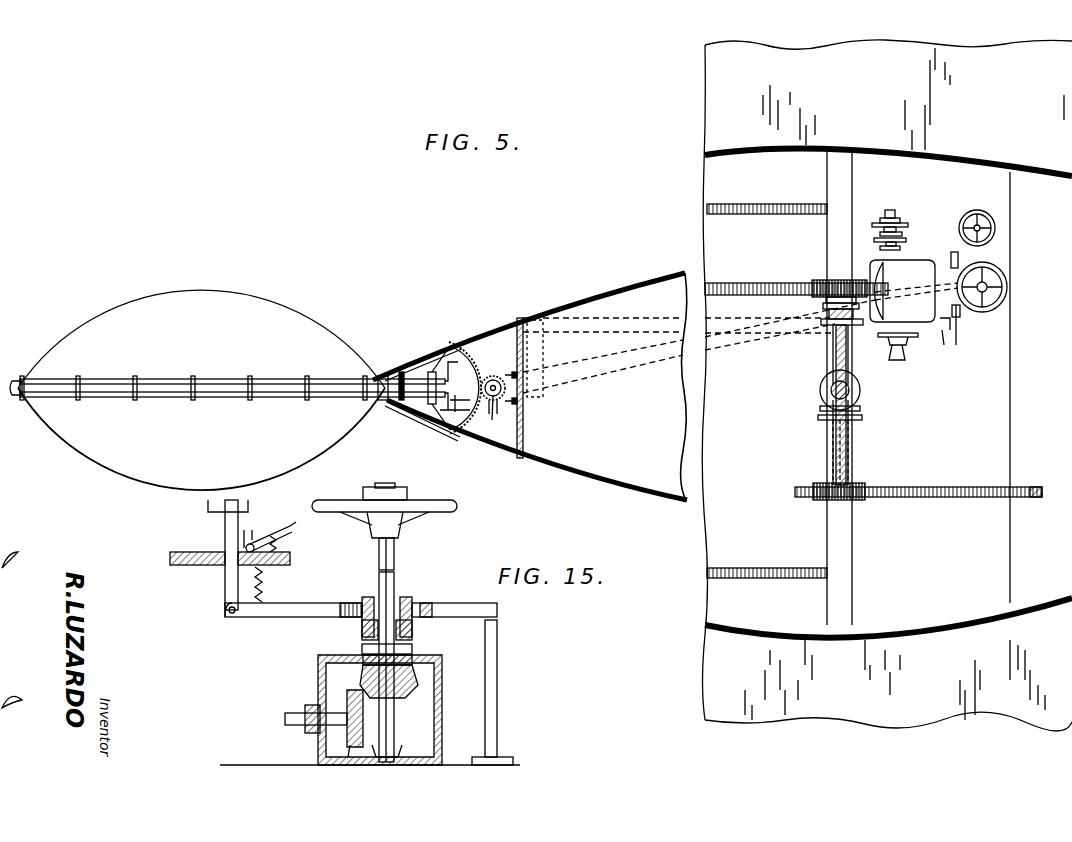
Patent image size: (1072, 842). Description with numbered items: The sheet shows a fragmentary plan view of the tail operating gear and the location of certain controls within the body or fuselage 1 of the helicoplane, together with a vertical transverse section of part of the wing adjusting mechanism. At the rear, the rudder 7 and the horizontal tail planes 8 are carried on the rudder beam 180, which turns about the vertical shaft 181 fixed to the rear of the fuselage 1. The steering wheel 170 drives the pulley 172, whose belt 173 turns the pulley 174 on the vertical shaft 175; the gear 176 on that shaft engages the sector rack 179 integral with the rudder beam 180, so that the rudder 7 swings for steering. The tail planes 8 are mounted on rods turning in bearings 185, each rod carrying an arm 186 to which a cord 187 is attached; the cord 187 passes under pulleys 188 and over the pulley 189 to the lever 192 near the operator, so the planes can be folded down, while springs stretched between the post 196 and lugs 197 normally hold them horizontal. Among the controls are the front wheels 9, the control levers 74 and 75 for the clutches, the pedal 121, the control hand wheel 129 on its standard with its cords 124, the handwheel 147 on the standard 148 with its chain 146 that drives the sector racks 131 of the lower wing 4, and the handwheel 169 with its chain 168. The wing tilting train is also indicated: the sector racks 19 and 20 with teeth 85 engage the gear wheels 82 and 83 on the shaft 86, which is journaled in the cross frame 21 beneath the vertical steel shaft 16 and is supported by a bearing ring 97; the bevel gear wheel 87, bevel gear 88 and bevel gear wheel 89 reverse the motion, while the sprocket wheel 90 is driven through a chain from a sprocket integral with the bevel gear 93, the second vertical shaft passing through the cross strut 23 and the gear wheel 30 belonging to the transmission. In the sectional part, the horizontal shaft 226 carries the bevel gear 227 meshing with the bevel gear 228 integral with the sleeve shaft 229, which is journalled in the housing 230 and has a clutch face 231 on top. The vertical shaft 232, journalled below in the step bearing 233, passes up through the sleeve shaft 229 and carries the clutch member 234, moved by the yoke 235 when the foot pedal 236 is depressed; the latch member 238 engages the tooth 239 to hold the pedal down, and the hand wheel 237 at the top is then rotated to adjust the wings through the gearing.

In FIG. 5, the body or fuselage 1 is at (962, 152).
In FIG. 5, the lower wing 4 is at (962, 715).
In FIG. 5, the rudder 7 is at (323, 398).
In FIG. 5, the horizontal tail planes 8 is at (201, 390).
In FIG. 5, the front wheels 9 is at (987, 328).
In FIG. 5, the vertical steel shaft 16 is at (858, 391).
In FIG. 5, the sector rack 19 is at (926, 487).
In FIG. 5, the sector rack 20 is at (776, 283).
In FIG. 5, the cross frame 21 is at (833, 353).
In FIG. 5, the cross strut 23 is at (853, 184).
In FIG. 5, the gear wheel 30 is at (912, 347).
In FIG. 5, the control lever 74 is at (995, 356).
In FIG. 5, the control lever 75 is at (975, 341).
In FIG. 5, the gear wheel 82 is at (862, 485).
In FIG. 5, the gear wheel 83 is at (838, 280).
In FIG. 5, the teeth 85 is at (826, 300).
In FIG. 5, the shaft 86 is at (848, 450).
In FIG. 5, the bevel gear wheel 87 is at (858, 322).
In FIG. 5, the bevel gear 88 is at (829, 313).
In FIG. 5, the bevel gear wheel 89 is at (823, 306).
In FIG. 5, the sprocket wheel 90 is at (818, 418).
In FIG. 5, the bevel gear 93 is at (861, 409).
In FIG. 5, the bearing ring 97 is at (820, 389).
In FIG. 5, the pedal 121 is at (963, 340).
In FIG. 5, the cords 124 is at (896, 361).
In FIG. 5, the control hand wheel 129 is at (873, 348).
In FIG. 5, the sector racks 131 is at (772, 204).
In FIG. 5, the chain 146 is at (880, 214).
In FIG. 5, the handwheel 147 is at (905, 223).
In FIG. 5, the standard 148 is at (890, 210).
In FIG. 5, the chain 168 is at (878, 242).
In FIG. 5, the handwheel 169 is at (900, 248).
In FIG. 5, the steering wheel 170 is at (1007, 296).
In FIG. 5, the pulley 172 is at (1007, 285).
In FIG. 5, the belt 173 is at (744, 352).
In FIG. 5, the pulley 174 is at (470, 416).
In FIG. 5, the vertical shaft 175 is at (501, 412).
In FIG. 5, the gear 176 is at (493, 376).
In FIG. 5, the sector rack 179 is at (456, 346).
In FIG. 5, the rudder beam 180 is at (390, 400).
In FIG. 5, the vertical shaft 181 is at (398, 406).
In FIG. 5, the bearings 185 is at (305, 378).
In FIG. 5, the arm 186 is at (447, 396).
In FIG. 5, the cord 187 is at (635, 326).
In FIG. 5, the pulleys 188 is at (457, 409).
In FIG. 5, the pulley 189 is at (530, 409).
In FIG. 5, the lever 192 is at (943, 345).
In FIG. 5, the post 196 is at (383, 376).
In FIG. 5, the lugs 197 is at (955, 334).
In FIG. 15, the horizontal shaft 226 is at (285, 719).
In FIG. 15, the bevel gear 227 is at (348, 760).
In FIG. 15, the bevel gear 228 is at (418, 691).
In FIG. 15, the sleeve shaft 229 is at (415, 668).
In FIG. 15, the housing 230 is at (318, 685).
In FIG. 15, the clutch face 231 is at (412, 648).
In FIG. 15, the vertical shaft 232 is at (396, 556).
In FIG. 15, the step bearing 233 is at (388, 762).
In FIG. 15, the clutch member 234 is at (362, 634).
In FIG. 15, the yoke 235 is at (335, 603).
In FIG. 5, the foot pedal 236 is at (959, 262).
In FIG. 15, the foot pedal 236 is at (208, 512).
In FIG. 5, the hand wheel 237 is at (977, 210).
In FIG. 15, the hand wheel 237 is at (458, 507).
In FIG. 15, the latch member 238 is at (276, 532).
In FIG. 15, the tooth 239 is at (245, 530).